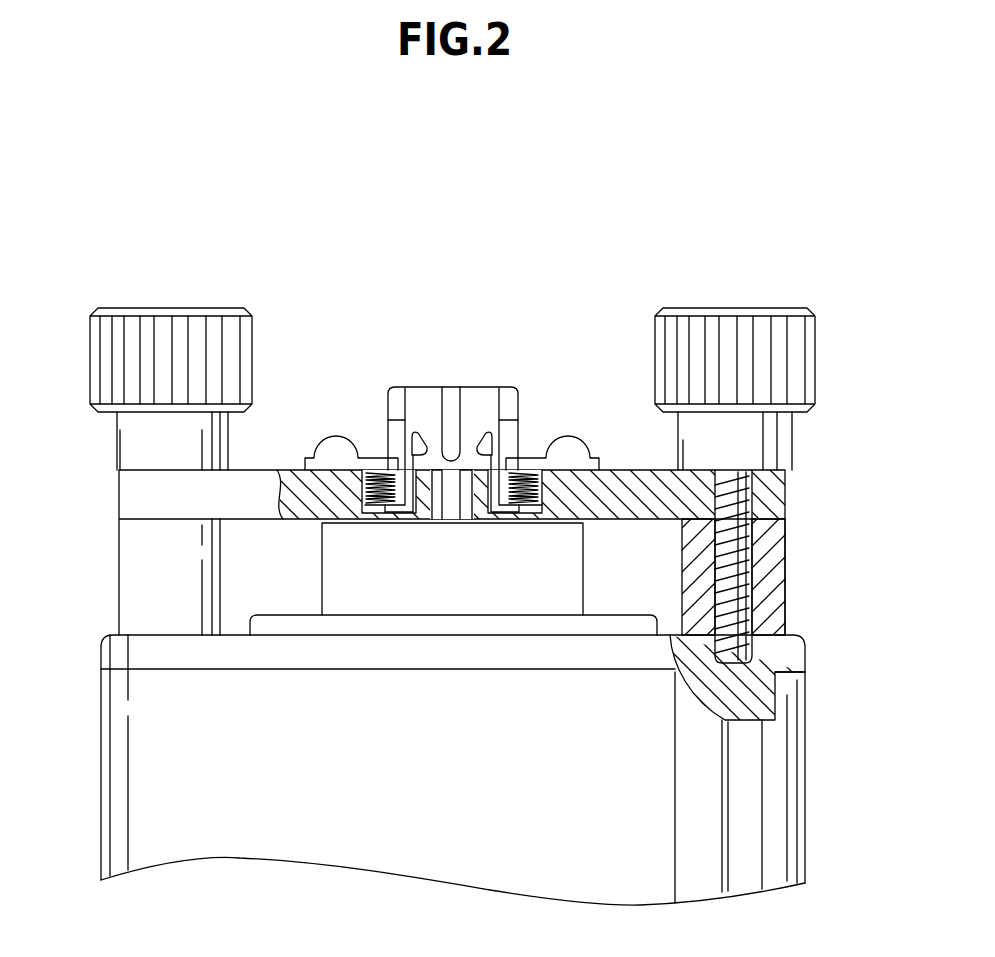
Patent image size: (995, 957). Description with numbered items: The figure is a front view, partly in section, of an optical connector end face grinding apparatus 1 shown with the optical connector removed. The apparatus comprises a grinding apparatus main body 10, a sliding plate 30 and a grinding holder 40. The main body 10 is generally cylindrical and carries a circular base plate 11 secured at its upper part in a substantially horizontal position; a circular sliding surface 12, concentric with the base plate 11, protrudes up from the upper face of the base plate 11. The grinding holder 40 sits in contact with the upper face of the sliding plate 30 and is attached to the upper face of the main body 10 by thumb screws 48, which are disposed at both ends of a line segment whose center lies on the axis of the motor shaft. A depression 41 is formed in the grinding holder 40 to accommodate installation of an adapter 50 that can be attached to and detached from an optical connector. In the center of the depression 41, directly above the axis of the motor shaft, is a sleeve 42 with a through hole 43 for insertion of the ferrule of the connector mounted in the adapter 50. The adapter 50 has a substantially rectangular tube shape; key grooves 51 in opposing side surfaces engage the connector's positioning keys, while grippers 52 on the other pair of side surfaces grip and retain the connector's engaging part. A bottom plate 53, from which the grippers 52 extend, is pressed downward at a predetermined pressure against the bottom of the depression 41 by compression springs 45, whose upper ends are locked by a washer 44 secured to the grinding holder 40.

The optical connector end face grinding apparatus 1 is at (623, 162).
The grinding apparatus main body 10 is at (805, 800).
The base plate 11 is at (748, 698).
The sliding surface 12 is at (613, 614).
The sliding plate 30 is at (320, 582).
The grinding holder 40 is at (118, 478).
The depression 41 is at (418, 508).
The sleeve 42 is at (481, 508).
The through hole 43 is at (454, 498).
The washer 44 is at (377, 469).
The compression springs 45 is at (378, 508).
The thumb screws 48 is at (160, 328).
The adapter 50 is at (523, 427).
The key grooves 51 is at (450, 416).
The grippers 52 is at (412, 436).
The bottom plate 53 is at (498, 502).